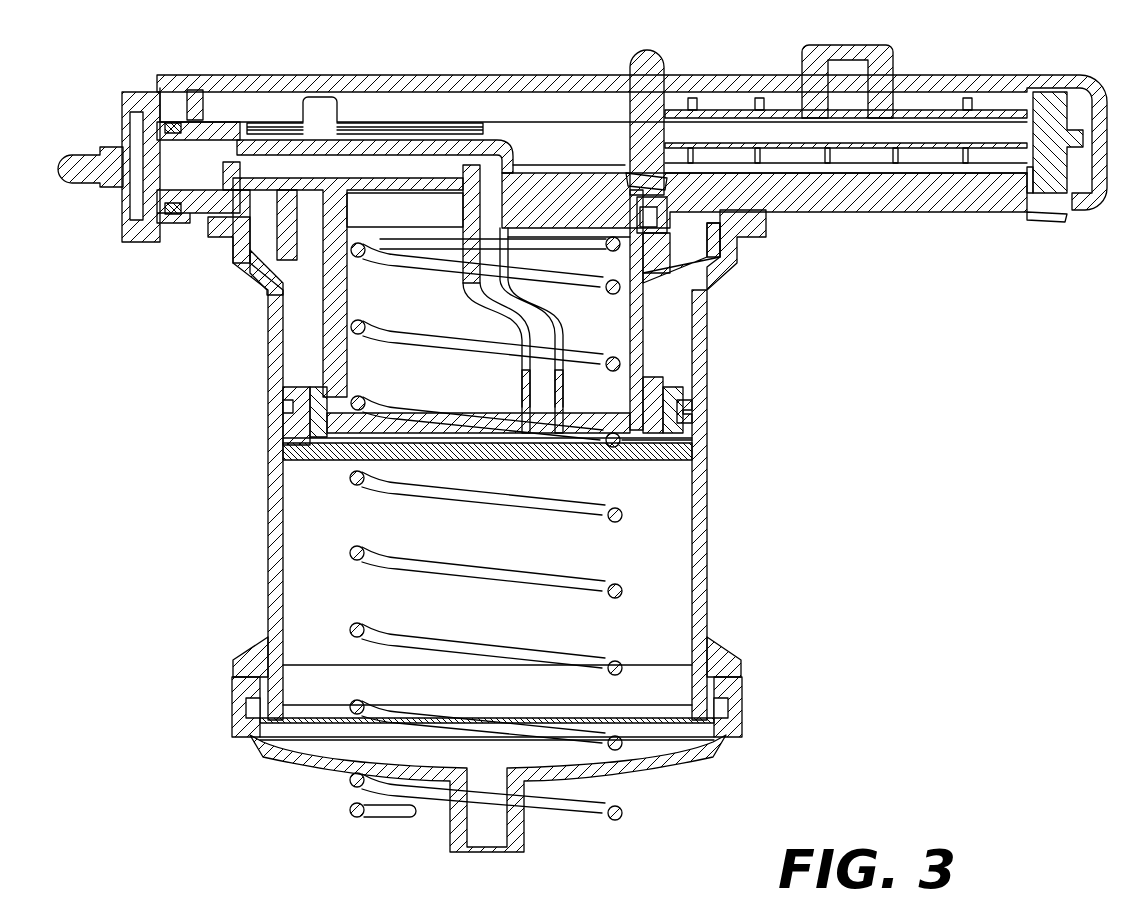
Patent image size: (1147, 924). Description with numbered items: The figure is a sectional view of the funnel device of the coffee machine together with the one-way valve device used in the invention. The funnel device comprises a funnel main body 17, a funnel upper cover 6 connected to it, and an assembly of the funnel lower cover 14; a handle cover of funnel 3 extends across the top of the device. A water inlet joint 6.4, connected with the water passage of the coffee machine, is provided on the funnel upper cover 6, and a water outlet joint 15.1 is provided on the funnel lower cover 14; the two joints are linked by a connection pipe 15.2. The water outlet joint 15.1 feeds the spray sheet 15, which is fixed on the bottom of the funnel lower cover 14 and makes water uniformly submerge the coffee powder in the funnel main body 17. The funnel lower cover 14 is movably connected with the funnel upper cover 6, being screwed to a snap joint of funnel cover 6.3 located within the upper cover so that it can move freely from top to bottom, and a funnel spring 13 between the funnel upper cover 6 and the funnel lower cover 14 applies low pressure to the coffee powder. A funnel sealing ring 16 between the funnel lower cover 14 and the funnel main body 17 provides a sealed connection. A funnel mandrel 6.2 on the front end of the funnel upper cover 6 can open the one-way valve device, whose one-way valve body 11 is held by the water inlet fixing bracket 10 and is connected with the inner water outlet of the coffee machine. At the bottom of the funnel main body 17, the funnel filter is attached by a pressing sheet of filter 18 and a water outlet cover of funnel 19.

The handle cover of funnel 3 is at (257, 74).
The funnel upper cover 6 is at (1068, 200).
The funnel mandrel 6.2 is at (137, 147).
The snap joint of funnel cover 6.3 is at (325, 373).
The water inlet joint 6.4 is at (625, 290).
The water inlet fixing bracket 10 is at (952, 108).
The one-way valve body 11 is at (663, 100).
The funnel spring 13 is at (297, 382).
The funnel lower cover 14 is at (330, 418).
The spray sheet 15 is at (290, 450).
The water outlet joint 15.1 is at (687, 380).
The connection pipe 15.2 is at (327, 290).
The funnel sealing ring 16 is at (682, 420).
The funnel main body 17 is at (707, 500).
The pressing sheet of filter 18 is at (717, 677).
The water outlet cover of funnel 19 is at (713, 753).